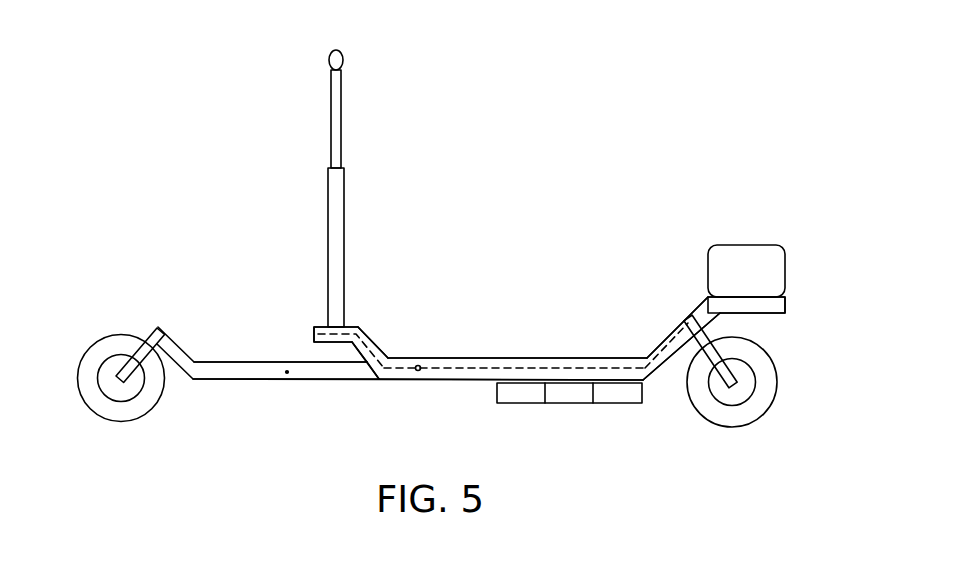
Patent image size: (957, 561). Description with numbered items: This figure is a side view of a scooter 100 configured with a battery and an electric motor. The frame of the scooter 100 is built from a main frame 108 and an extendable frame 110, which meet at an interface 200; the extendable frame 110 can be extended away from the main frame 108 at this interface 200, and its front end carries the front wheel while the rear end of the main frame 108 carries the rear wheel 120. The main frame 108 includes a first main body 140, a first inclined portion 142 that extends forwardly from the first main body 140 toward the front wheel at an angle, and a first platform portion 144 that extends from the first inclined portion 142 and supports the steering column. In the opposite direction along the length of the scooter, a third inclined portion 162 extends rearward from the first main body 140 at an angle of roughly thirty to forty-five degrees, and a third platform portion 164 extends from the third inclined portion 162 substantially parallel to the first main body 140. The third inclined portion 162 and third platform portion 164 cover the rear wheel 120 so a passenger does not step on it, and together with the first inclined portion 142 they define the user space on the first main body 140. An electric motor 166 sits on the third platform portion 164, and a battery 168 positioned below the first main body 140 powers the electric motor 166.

The scooter 100 is at (747, 169).
The main frame 108 is at (453, 380).
The extendable frame 110 is at (267, 379).
The rear wheel 120 is at (758, 407).
The first main body 140 is at (517, 357).
The first inclined portion 142 is at (378, 346).
The first platform portion 144 is at (325, 326).
The third inclined portion 162 is at (657, 343).
The third platform portion 164 is at (767, 308).
The electric motor 166 is at (745, 247).
The battery 168 is at (568, 405).
The interface 200 is at (375, 380).